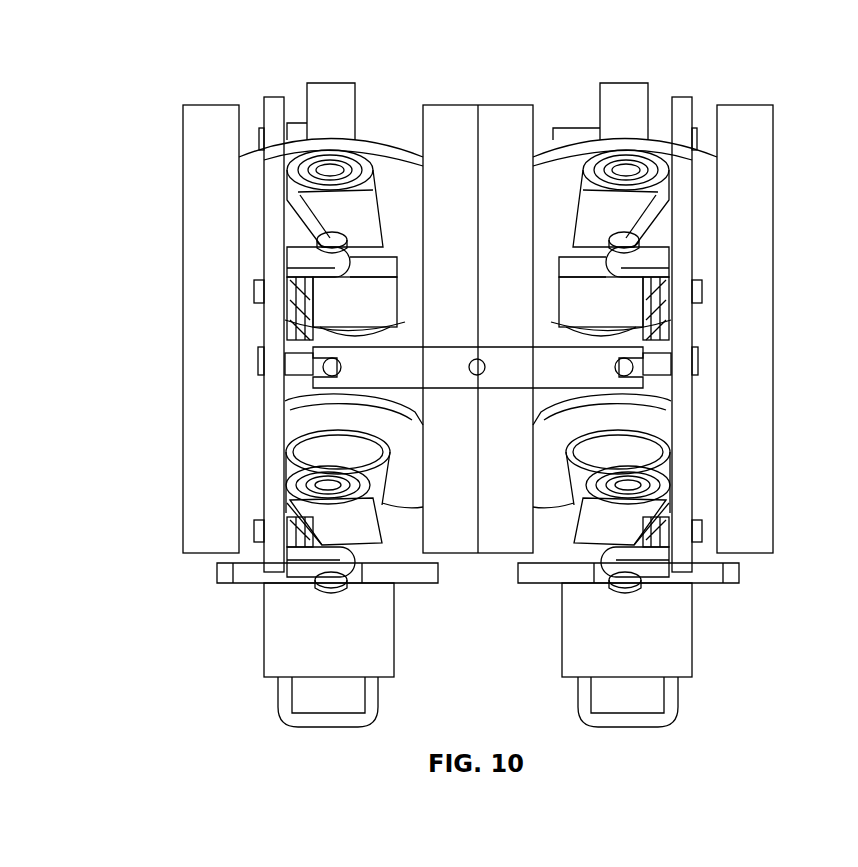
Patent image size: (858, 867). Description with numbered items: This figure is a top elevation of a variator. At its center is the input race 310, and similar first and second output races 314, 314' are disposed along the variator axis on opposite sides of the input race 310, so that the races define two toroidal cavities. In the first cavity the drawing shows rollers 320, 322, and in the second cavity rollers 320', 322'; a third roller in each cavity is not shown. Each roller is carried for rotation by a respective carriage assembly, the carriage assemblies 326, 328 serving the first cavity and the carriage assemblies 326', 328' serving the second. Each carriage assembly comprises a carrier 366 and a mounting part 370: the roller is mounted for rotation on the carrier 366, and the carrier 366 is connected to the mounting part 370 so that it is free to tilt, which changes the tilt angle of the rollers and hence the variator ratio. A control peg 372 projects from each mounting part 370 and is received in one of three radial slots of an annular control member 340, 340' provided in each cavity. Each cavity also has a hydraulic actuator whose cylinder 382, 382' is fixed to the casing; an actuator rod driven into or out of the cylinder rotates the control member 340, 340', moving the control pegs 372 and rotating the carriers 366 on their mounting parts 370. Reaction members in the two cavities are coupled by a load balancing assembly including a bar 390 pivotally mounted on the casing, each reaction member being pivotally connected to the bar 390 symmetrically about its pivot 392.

The input race 310 is at (450, 104).
The first output race 314 is at (208, 301).
The second output race 314' is at (750, 301).
The roller 320 is at (331, 210).
The roller 320' is at (625, 208).
The roller 322 is at (369, 518).
The roller 322' is at (584, 518).
The carriage assembly 326 is at (258, 284).
The carriage assembly 326' is at (700, 290).
The carriage assembly 328 is at (206, 516).
The carriage assembly 328' is at (737, 511).
The annular control member 340 is at (198, 334).
The annular control member 340' is at (754, 334).
The carrier 366 is at (315, 236).
The mounting part 370 is at (312, 322).
The control peg 372 is at (253, 292).
The cylinder 382 is at (292, 655).
The cylinder 382' is at (665, 655).
The bar 390 is at (597, 398).
The pivot 392 is at (477, 360).